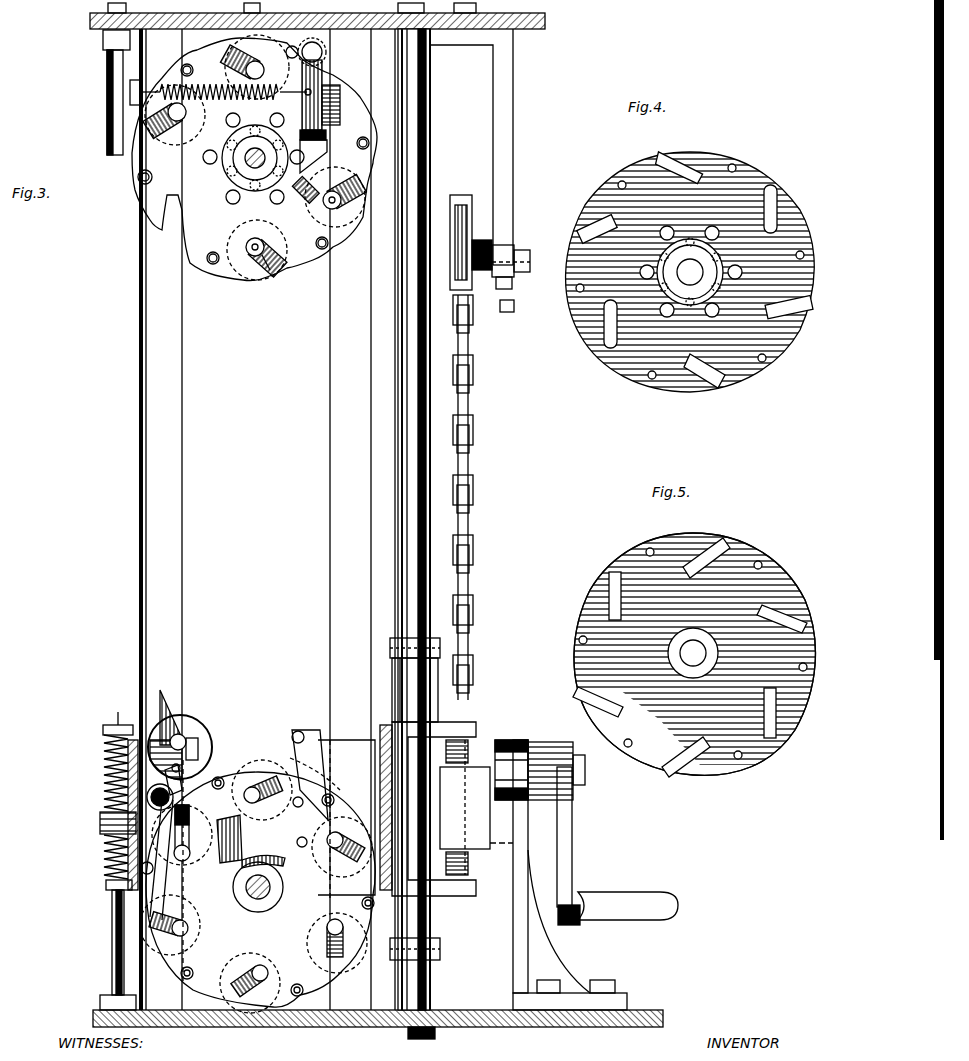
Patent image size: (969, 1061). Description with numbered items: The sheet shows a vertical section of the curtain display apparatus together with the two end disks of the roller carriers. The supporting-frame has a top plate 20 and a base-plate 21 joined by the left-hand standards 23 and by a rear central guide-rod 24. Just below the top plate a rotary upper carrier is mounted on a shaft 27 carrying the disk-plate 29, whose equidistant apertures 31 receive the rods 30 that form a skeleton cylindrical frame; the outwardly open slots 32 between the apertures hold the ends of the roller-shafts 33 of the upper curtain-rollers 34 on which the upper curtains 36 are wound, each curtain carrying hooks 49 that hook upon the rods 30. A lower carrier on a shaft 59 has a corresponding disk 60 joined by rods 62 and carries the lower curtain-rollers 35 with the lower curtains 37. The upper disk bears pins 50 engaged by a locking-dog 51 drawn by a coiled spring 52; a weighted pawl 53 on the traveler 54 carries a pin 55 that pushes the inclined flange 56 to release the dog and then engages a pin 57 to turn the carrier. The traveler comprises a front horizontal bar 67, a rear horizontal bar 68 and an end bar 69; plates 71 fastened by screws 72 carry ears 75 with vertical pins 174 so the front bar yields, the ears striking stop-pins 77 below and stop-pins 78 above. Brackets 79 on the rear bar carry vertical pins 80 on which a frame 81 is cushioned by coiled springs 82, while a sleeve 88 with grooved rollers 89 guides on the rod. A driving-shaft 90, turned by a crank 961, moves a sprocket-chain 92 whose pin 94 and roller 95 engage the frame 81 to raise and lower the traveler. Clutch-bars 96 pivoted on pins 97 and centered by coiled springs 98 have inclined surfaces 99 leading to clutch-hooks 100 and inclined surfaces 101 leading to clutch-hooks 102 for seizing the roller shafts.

In FIG. 3, the top plate 20 is at (540, 29).
In FIG. 3, the base-plate 21 is at (465, 1027).
In FIG. 3, the left-hand standards 23 is at (182, 490).
In FIG. 3, the rear central guide-rod 24 is at (431, 148).
In FIG. 3, the shaft 27 is at (240, 165).
In FIG. 3, the disk-plate 29 is at (165, 145).
In FIG. 4, the disk-plate 29 is at (640, 330).
In FIG. 3, the rods 30 is at (200, 35).
In FIG. 4, the apertures 31 is at (620, 182).
In FIG. 3, the slots 32 is at (148, 134).
In FIG. 4, the slots 32 is at (660, 168).
In FIG. 3, the roller-shafts 33 is at (322, 210).
In FIG. 3, the upper curtain-rollers 34 is at (272, 272).
In FIG. 3, the lower curtain-rollers 35 is at (306, 928).
In FIG. 3, the upper curtains 36 is at (140, 471).
In FIG. 3, the lower curtains 37 is at (282, 962).
In FIG. 3, the hooks 49 is at (156, 180).
In FIG. 3, the pins 50 is at (262, 204).
In FIG. 4, the pins 50 is at (648, 346).
In FIG. 3, the locking-dog 51 is at (318, 158).
In FIG. 3, the coiled spring 52 is at (195, 85).
In FIG. 3, the pawl 53 is at (318, 730).
In FIG. 3, the traveler 54 is at (346, 807).
In FIG. 3, the pin 55 is at (295, 735).
In FIG. 3, the inclined flange 56 is at (300, 198).
In FIG. 4, the pin 57 is at (720, 290).
In FIG. 3, the shaft 59 is at (272, 894).
In FIG. 3, the disk 60 is at (325, 995).
In FIG. 5, the disk 60 is at (694, 659).
In FIG. 3, the rods 62 is at (334, 800).
In FIG. 3, the front horizontal bar 67 is at (104, 855).
In FIG. 3, the rear horizontal bar 68 is at (383, 722).
In FIG. 3, the end bar 69 is at (322, 758).
In FIG. 3, the plates 71 is at (110, 895).
In FIG. 3, the screws 72 is at (100, 823).
In FIG. 3, the ears 75 is at (103, 728).
In FIG. 3, the stop-pins 77 is at (112, 953).
In FIG. 3, the stop-pins 78 is at (107, 75).
In FIG. 3, the brackets 79 is at (398, 722).
In FIG. 3, the vertical pins 80 is at (470, 725).
In FIG. 3, the frame 81 is at (533, 875).
In FIG. 3, the coiled springs 82 is at (478, 740).
In FIG. 3, the sleeve 88 is at (392, 668).
In FIG. 3, the grooved rollers 89 is at (408, 640).
In FIG. 3, the driving-shaft 90 is at (585, 777).
In FIG. 3, the sprocket-chain 92 is at (475, 497).
In FIG. 3, the pin 94 is at (480, 240).
In FIG. 3, the roller 95 is at (483, 147).
In FIG. 3, the clutch-bars 96 is at (178, 700).
In FIG. 3, the pins 97 is at (148, 792).
In FIG. 3, the coiled springs 98 is at (162, 775).
In FIG. 3, the inclined surfaces 99 is at (188, 720).
In FIG. 3, the clutch-hooks 100 is at (198, 748).
In FIG. 3, the inclined surfaces 101 is at (190, 912).
In FIG. 3, the clutch-hooks 102 is at (190, 860).
In FIG. 3, the vertical pins 174 is at (116, 712).
In FIG. 3, the crank 961 is at (617, 846).